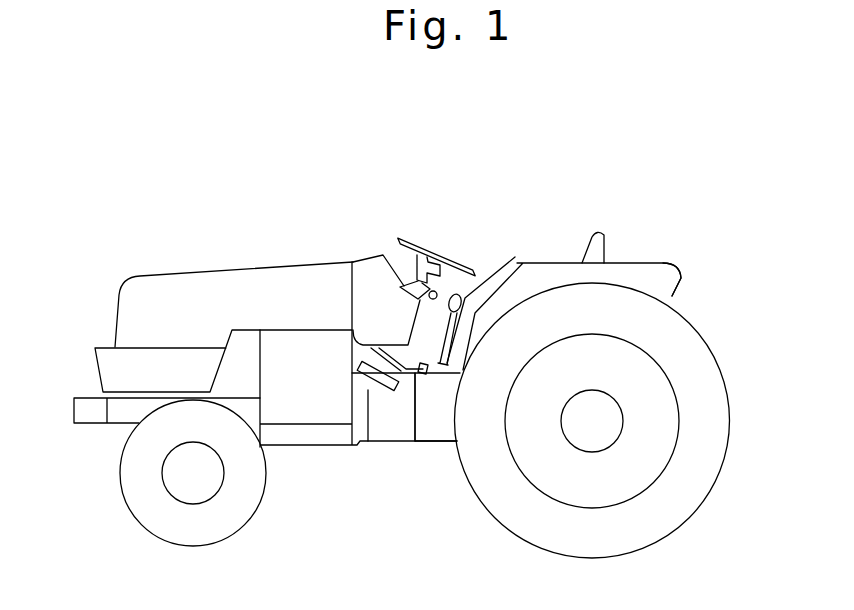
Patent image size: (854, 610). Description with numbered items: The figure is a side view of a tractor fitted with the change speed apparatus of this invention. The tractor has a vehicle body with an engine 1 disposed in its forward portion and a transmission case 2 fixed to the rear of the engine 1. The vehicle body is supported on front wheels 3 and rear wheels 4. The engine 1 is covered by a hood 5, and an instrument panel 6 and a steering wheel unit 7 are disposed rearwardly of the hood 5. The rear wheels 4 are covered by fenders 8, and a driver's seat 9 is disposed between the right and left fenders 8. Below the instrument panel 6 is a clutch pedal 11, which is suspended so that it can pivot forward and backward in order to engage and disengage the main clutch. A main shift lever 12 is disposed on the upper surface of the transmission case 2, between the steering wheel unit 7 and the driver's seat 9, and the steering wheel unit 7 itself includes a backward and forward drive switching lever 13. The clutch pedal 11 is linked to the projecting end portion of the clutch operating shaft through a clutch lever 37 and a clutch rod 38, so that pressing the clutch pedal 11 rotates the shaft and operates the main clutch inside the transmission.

The engine 1 is at (285, 413).
The transmission case 2 is at (443, 447).
The front wheels 3 is at (148, 518).
The rear wheels 4 is at (663, 518).
The hood 5 is at (159, 283).
The instrument panel 6 is at (373, 270).
The steering wheel unit 7 is at (418, 240).
The fenders 8 is at (673, 292).
The driver's seat 9 is at (608, 243).
The clutch pedal 11 is at (415, 400).
The main shift lever 12 is at (522, 254).
The backward and forward drive switching lever 13 is at (457, 267).
The clutch lever 37 is at (383, 385).
The clutch rod 38 is at (363, 350).